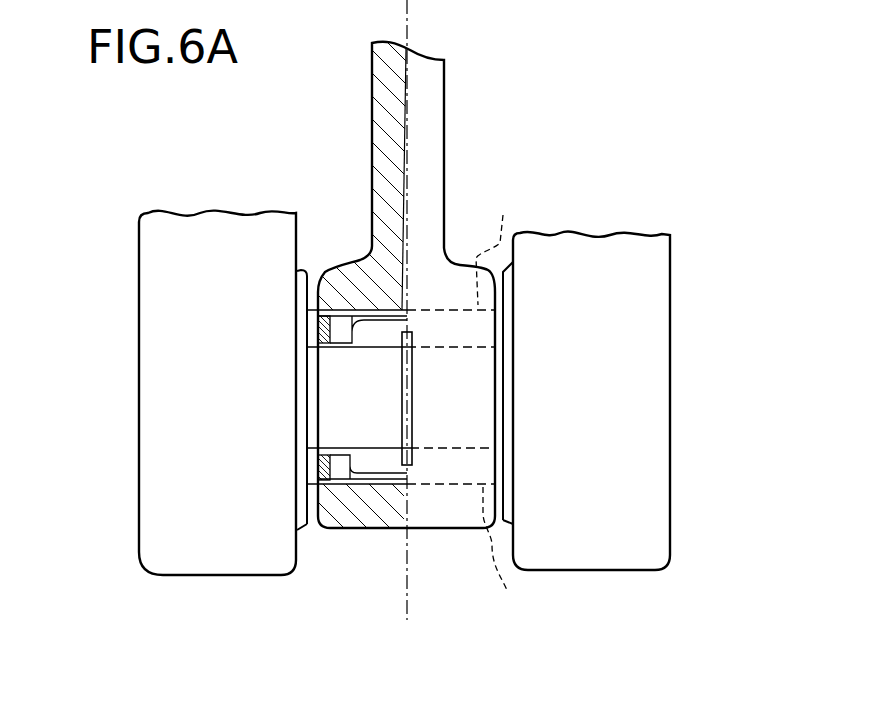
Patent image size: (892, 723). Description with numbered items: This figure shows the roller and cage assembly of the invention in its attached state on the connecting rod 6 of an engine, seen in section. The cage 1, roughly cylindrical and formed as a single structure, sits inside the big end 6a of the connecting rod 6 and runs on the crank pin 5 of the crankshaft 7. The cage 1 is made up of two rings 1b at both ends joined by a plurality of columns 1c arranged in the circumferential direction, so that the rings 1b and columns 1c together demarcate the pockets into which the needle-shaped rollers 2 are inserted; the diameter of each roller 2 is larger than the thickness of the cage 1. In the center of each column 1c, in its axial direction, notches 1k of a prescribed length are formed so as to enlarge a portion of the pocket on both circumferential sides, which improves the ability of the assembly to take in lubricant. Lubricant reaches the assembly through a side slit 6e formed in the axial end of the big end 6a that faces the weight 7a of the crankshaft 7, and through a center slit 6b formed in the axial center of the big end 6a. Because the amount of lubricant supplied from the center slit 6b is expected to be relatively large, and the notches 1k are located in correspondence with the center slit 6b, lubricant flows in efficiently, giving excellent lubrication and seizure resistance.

The cage 1 is at (313, 333).
The ring 1b is at (318, 328).
The column 1c is at (395, 307).
The notch 1k is at (410, 318).
The roller 2 is at (365, 255).
The crank pin 5 is at (325, 370).
The connecting rod 6 is at (453, 117).
The big end 6a is at (403, 510).
The center slit 6b is at (413, 367).
The side slit 6e is at (318, 305).
The crankshaft 7 is at (414, 412).
The weight 7a is at (152, 494).